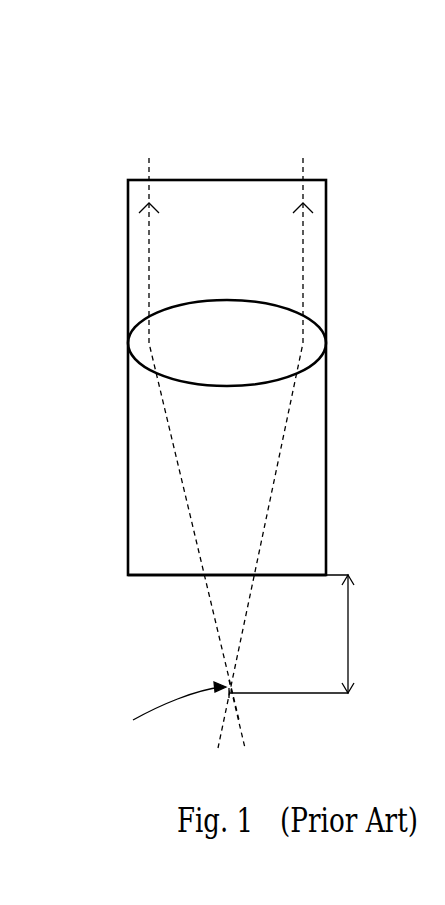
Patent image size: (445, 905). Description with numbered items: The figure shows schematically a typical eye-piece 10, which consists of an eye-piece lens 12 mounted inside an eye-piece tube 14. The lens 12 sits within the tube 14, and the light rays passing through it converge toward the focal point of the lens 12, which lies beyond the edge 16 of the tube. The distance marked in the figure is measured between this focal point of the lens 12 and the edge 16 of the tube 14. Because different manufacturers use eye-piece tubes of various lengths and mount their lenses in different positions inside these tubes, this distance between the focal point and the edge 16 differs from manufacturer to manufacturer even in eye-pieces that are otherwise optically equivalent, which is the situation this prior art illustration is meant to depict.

The eye-piece 10 is at (271, 147).
The eye-piece lens 12 is at (233, 325).
The eye-piece tube 14 is at (327, 213).
The edge of the tube 16 is at (154, 577).